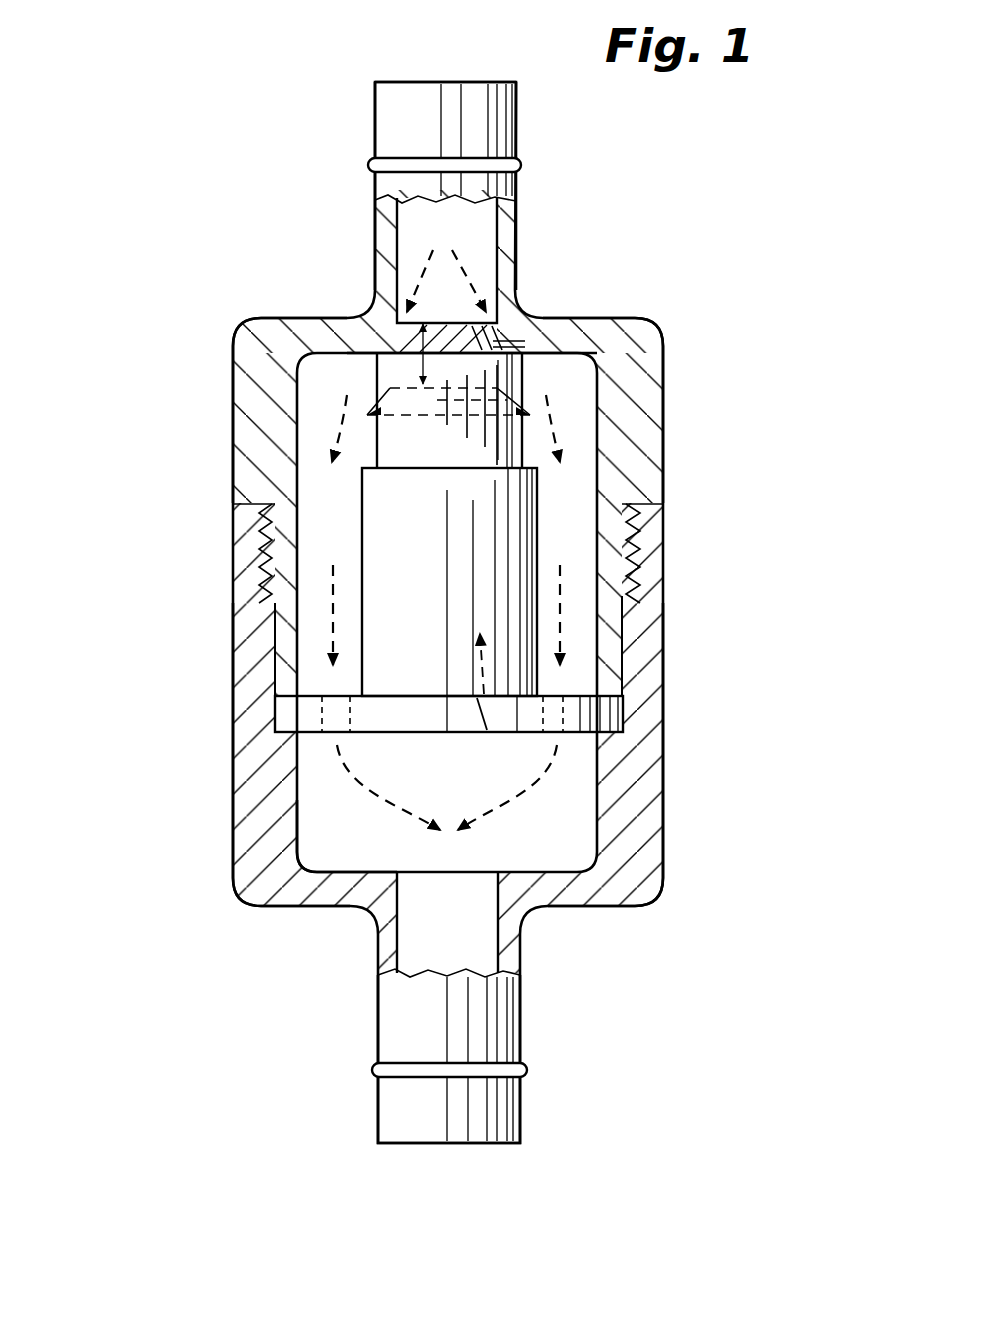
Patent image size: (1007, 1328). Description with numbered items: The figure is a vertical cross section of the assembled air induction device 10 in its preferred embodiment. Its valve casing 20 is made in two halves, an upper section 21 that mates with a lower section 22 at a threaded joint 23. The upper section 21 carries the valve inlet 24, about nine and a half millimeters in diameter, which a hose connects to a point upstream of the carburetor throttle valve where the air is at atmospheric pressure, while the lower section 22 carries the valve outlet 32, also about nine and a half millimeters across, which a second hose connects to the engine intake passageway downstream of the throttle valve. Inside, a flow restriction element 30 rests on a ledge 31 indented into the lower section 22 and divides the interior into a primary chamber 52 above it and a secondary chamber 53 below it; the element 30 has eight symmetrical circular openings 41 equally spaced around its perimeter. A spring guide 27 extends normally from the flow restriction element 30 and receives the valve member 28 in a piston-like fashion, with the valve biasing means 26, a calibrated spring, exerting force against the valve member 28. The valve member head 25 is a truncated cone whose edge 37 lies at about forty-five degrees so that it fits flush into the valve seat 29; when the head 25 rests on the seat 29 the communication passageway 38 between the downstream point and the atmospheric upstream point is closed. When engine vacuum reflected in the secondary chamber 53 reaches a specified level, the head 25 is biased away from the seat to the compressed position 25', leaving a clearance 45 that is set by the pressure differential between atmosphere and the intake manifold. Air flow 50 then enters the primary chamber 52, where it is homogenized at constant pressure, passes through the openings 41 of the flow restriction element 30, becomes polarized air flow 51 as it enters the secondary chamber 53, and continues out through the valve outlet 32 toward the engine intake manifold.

The air induction device 10 is at (283, 103).
The valve casing 20 is at (611, 645).
The upper section 21 is at (243, 360).
The lower section 22 is at (253, 802).
The threaded joint 23 is at (272, 508).
The valve inlet 24 is at (405, 258).
The valve member head 25 is at (605, 307).
The compressed position 25' is at (588, 415).
The valve biasing means 26 is at (487, 733).
The spring guide 27 is at (362, 612).
The valve member 28 is at (523, 448).
The valve seat 29 is at (420, 345).
The flow restriction element 30 is at (624, 708).
The ledge 31 is at (275, 712).
The valve outlet 32 is at (430, 935).
The edge 37 is at (493, 343).
The communication passageway 38 is at (478, 1146).
The circular openings 41 is at (333, 735).
The clearance 45 is at (370, 337).
The air flow 50 is at (448, 440).
The polarized air flow 51 is at (447, 806).
The primary chamber 52 is at (312, 418).
The secondary chamber 53 is at (337, 848).